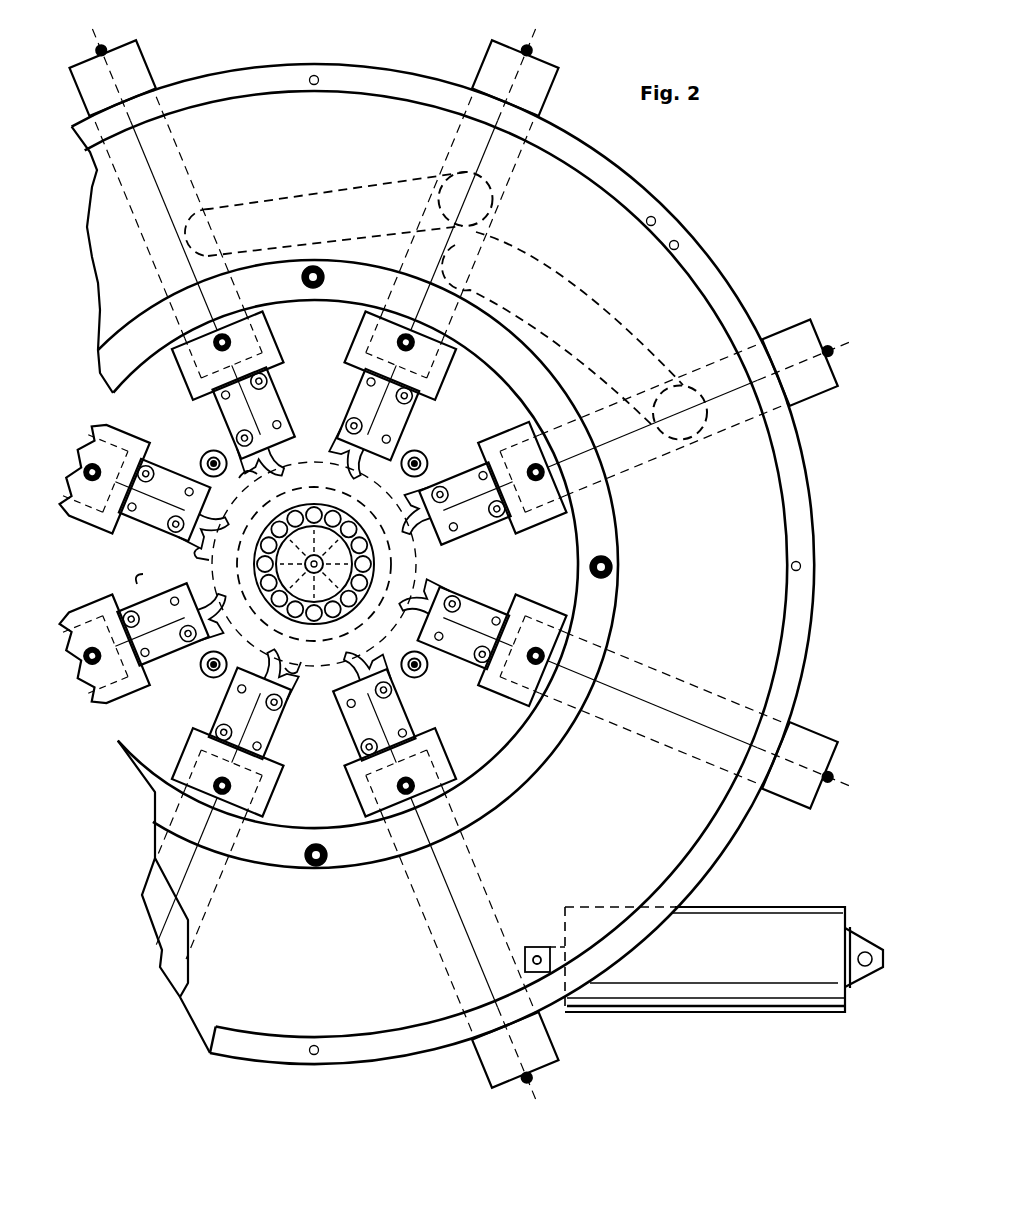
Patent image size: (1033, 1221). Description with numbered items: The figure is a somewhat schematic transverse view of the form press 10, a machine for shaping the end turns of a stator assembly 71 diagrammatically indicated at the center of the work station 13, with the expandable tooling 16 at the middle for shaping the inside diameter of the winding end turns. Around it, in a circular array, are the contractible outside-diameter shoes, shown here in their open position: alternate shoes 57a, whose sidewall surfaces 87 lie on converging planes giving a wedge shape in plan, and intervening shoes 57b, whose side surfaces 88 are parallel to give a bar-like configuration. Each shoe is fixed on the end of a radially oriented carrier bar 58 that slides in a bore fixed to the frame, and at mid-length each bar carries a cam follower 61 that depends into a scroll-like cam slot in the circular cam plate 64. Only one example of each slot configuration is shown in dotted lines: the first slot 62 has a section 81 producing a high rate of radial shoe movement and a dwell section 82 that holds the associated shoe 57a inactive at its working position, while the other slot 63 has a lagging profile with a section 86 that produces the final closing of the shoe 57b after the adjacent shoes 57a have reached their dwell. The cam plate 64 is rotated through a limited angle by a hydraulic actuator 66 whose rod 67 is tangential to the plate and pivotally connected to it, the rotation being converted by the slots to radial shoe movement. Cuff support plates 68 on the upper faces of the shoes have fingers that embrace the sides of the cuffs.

The form press 10 is at (594, 80).
The work station 13 is at (414, 441).
The expandable tooling 16 is at (343, 586).
The alternate shoes 57a is at (339, 385).
The intervening shoes 57b is at (459, 564).
The carrier bars 58 is at (804, 361).
The cam follower 61 is at (493, 197).
The first cam slot 62 is at (325, 193).
The other cam slot 63 is at (607, 292).
The cam plate 64 is at (688, 300).
The hydraulic actuator 66 is at (769, 912).
The rod 67 is at (541, 947).
The cuff support plates 68 is at (292, 445).
The stator assembly 71 is at (401, 576).
The section 81 is at (387, 181).
The dwell section 82 is at (233, 205).
The section 86 is at (540, 254).
The sidewall surfaces 87 is at (209, 552).
The side surfaces 88 is at (293, 472).